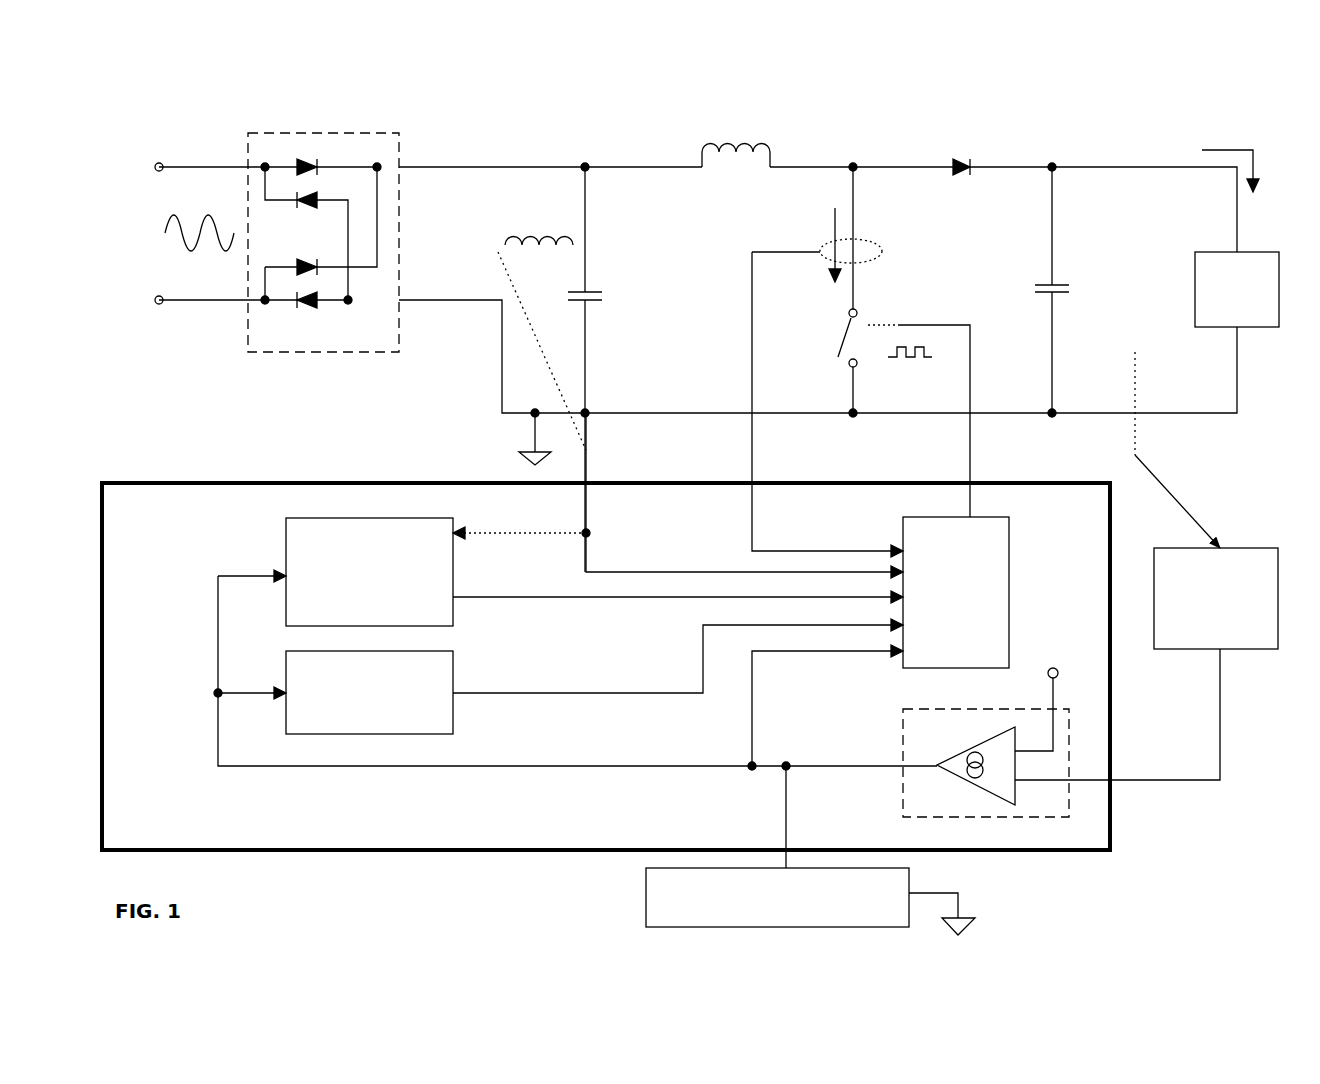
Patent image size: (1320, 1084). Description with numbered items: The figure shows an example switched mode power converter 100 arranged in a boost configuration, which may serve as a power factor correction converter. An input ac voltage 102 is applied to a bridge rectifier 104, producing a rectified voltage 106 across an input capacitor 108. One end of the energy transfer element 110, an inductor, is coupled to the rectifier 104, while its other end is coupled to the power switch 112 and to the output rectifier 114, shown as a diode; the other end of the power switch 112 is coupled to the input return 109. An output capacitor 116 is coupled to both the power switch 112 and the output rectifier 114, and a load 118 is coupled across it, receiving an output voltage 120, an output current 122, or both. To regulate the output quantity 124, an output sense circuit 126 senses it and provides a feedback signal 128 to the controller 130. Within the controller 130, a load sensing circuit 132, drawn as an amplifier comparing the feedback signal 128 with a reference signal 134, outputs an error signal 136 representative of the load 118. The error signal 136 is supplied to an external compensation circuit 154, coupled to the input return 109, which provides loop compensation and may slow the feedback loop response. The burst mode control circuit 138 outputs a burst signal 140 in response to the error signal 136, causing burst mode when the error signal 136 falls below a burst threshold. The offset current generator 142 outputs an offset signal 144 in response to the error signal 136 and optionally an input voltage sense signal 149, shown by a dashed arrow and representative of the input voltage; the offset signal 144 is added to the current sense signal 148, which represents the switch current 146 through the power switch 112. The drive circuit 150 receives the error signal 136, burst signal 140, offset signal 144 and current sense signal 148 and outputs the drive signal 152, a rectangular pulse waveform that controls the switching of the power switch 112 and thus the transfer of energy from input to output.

The power converter 100 is at (1303, 84).
The input ac voltage 102 is at (130, 222).
The rectifier 104 is at (248, 135).
The rectified voltage 106 is at (480, 222).
The input capacitor 108 is at (607, 278).
The input return 109 is at (525, 455).
The energy transfer element 110 is at (700, 128).
The power switch 112 is at (822, 357).
The output rectifier 114 is at (990, 130).
The output capacitor 116 is at (1038, 275).
The load 118 is at (1245, 250).
The output voltage 120 is at (1107, 272).
The output current 122 is at (1205, 133).
The output quantity 124 is at (1145, 350).
The output sense circuit 126 is at (1248, 542).
The feedback signal 128 is at (1160, 737).
The controller 130 is at (290, 476).
The load sensing circuit 132 is at (917, 705).
The reference signal 134 is at (1055, 640).
The error signal 136 is at (830, 727).
The burst mode control circuit 138 is at (283, 672).
The burst signal 140 is at (548, 653).
The offset current generator 142 is at (283, 560).
The offset signal 144 is at (515, 576).
The switch current 146 is at (790, 222).
The current sense signal 148 is at (897, 520).
The input voltage sense signal 149 is at (700, 537).
The drive circuit 150 is at (1015, 598).
The drive signal 152 is at (920, 272).
The compensation circuit 154 is at (643, 897).